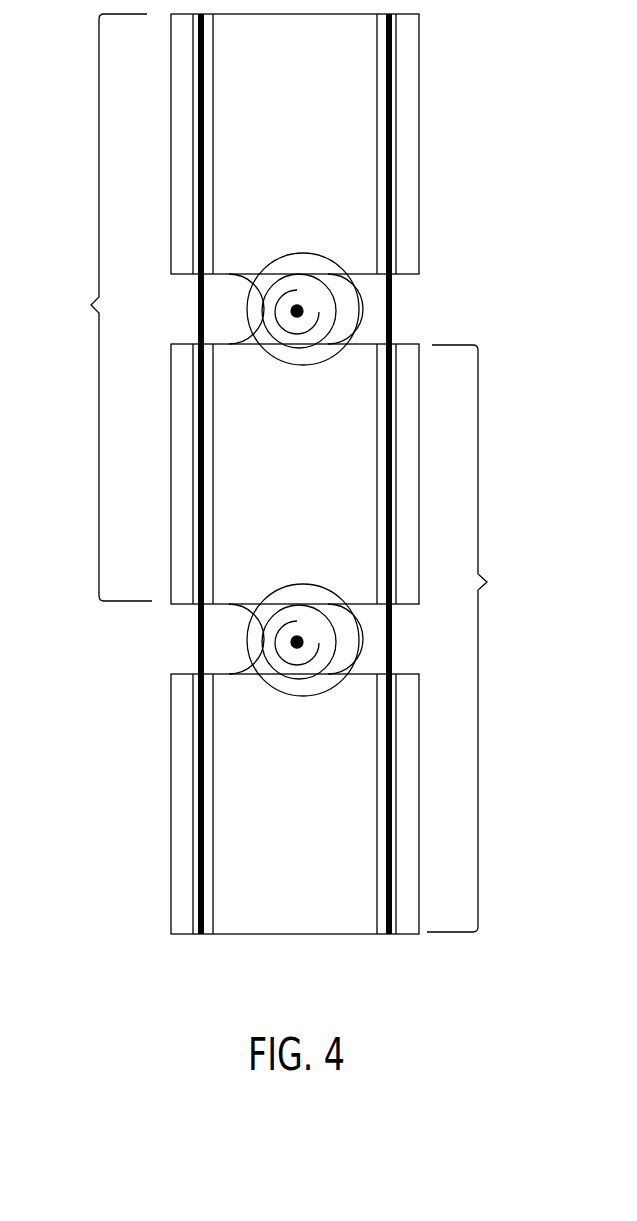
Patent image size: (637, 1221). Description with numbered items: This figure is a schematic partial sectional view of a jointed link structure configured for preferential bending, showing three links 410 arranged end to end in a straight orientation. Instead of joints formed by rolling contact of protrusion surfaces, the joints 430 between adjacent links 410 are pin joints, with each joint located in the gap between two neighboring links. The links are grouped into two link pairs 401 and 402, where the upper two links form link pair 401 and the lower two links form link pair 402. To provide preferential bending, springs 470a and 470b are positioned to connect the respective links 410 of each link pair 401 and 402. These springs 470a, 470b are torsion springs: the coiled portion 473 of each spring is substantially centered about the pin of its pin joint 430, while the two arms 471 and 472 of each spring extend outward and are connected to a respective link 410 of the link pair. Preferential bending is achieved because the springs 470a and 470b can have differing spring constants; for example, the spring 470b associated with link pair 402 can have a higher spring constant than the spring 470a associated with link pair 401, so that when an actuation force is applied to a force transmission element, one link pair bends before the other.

The link pair 401 is at (99, 307).
The link pair 402 is at (479, 638).
The link 410 is at (171, 180).
The pin joint 430 is at (328, 318).
The spring 470a is at (330, 270).
The spring 470b is at (297, 697).
The arm 471 is at (300, 306).
The arm 472 is at (362, 302).
The coiled portion 473 is at (300, 365).